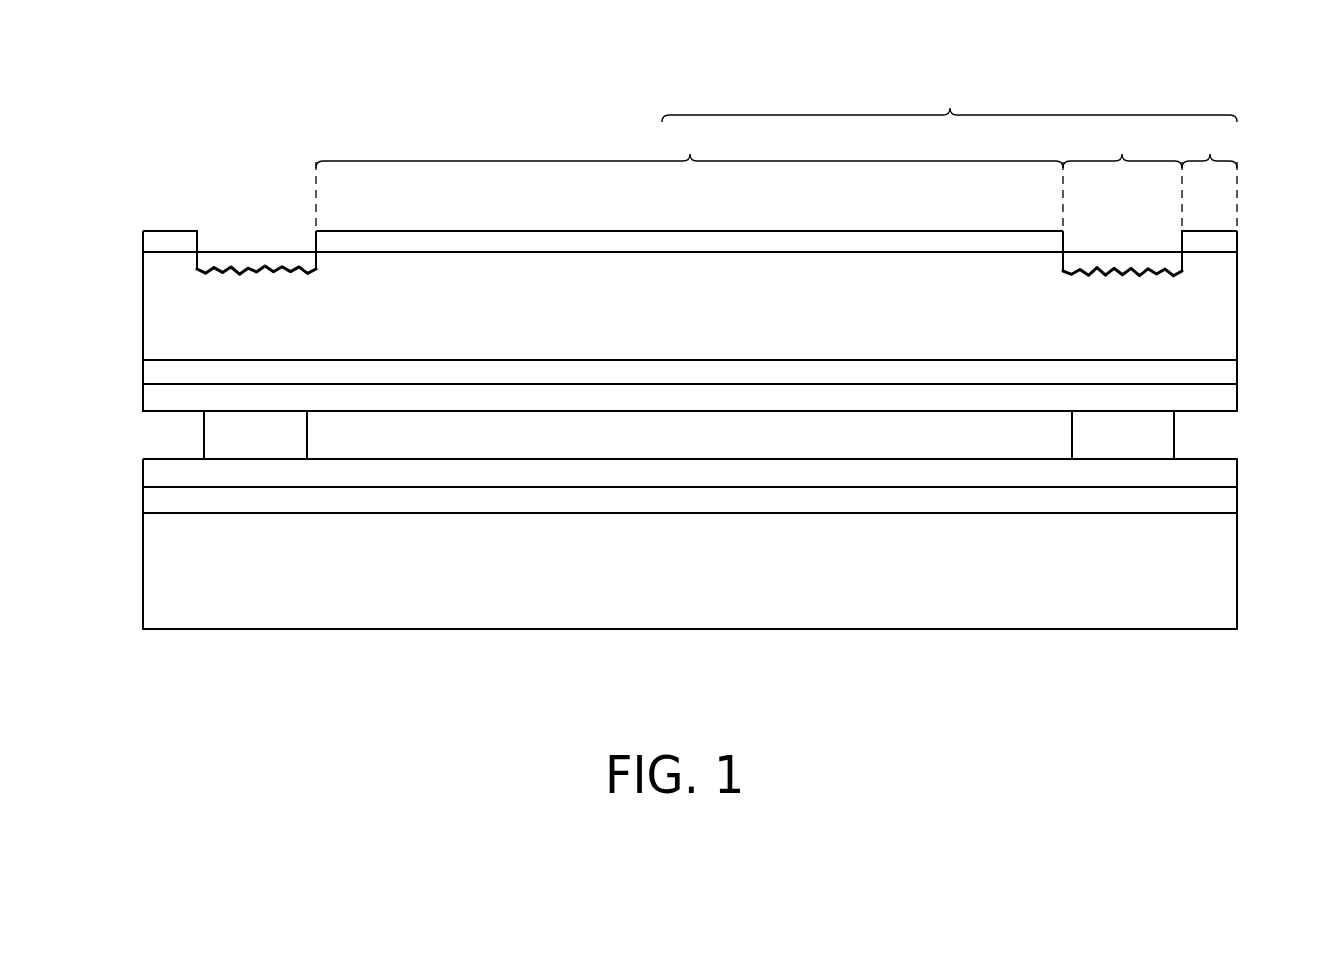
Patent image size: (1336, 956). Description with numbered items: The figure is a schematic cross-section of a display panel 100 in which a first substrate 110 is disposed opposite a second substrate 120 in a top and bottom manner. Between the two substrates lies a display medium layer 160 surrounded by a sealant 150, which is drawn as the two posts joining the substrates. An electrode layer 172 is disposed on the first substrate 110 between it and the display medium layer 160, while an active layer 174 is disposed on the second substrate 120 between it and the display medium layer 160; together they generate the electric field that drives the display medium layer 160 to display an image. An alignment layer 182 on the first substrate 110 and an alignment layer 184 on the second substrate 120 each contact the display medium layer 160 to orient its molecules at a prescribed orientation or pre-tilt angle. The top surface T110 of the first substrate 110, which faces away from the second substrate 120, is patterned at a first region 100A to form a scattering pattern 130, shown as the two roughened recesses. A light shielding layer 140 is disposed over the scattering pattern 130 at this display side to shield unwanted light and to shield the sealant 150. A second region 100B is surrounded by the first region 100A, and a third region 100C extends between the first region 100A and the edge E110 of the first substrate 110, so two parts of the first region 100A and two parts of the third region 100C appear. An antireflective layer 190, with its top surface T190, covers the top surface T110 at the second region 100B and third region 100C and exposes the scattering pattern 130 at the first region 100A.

The display panel 100 is at (1313, 720).
The first substrate 110 is at (1213, 310).
The second substrate 120 is at (1215, 586).
The scattering pattern 130 is at (1100, 268).
The light shielding layer 140 is at (1155, 258).
The sealant 150 is at (1160, 445).
The display medium layer 160 is at (997, 443).
The electrode layer 172 is at (1225, 375).
The active layer 174 is at (1220, 500).
The alignment layer 182 is at (1230, 398).
The alignment layer 184 is at (1217, 475).
The antireflective layer 190 is at (645, 245).
The top surface of the antireflective layer T190 is at (466, 222).
The top surface of the first substrate T110 is at (949, 98).
The edge of the first substrate E110 is at (1249, 287).
The first region 100A is at (1122, 176).
The second region 100B is at (689, 176).
The third region 100C is at (1209, 176).